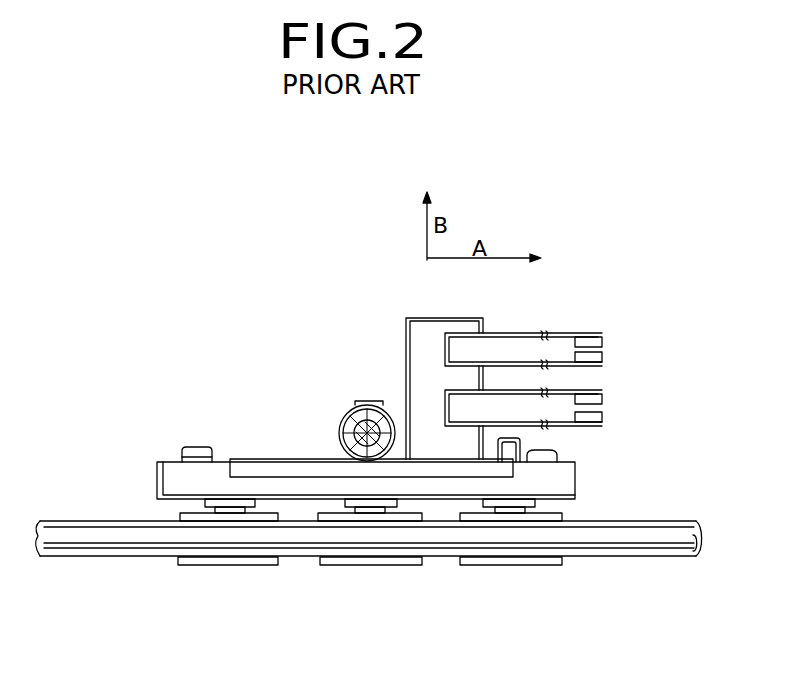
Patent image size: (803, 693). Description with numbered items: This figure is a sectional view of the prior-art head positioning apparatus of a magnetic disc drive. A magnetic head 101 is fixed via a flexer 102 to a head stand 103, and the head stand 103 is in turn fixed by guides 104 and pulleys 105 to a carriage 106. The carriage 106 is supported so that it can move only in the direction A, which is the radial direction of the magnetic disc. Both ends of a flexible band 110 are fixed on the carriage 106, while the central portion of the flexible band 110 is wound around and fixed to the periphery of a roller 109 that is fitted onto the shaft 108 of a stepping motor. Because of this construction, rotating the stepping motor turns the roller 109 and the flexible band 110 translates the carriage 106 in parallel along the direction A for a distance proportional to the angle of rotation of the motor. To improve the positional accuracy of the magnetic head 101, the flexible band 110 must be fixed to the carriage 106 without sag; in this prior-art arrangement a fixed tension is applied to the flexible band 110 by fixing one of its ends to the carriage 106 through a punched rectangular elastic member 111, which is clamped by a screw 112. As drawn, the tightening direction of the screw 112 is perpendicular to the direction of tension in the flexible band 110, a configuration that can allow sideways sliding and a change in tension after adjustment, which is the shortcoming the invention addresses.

The magnetic head 101 is at (603, 342).
The flexer 102 is at (525, 333).
The head stand 103 is at (410, 340).
The guide 104 is at (103, 530).
The pulley 105 is at (247, 565).
The carriage 106 is at (143, 468).
The shaft 108 is at (341, 438).
The roller 109 is at (348, 408).
The flexible band 110 is at (258, 459).
The punched rectangular elastic member 111 is at (523, 444).
The screw 112 is at (553, 453).